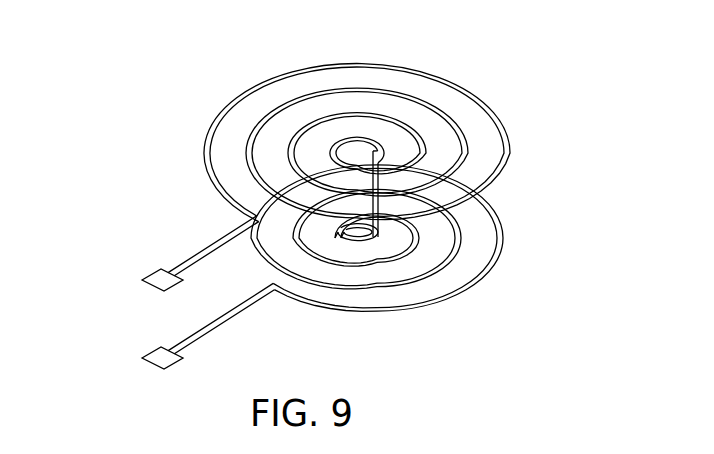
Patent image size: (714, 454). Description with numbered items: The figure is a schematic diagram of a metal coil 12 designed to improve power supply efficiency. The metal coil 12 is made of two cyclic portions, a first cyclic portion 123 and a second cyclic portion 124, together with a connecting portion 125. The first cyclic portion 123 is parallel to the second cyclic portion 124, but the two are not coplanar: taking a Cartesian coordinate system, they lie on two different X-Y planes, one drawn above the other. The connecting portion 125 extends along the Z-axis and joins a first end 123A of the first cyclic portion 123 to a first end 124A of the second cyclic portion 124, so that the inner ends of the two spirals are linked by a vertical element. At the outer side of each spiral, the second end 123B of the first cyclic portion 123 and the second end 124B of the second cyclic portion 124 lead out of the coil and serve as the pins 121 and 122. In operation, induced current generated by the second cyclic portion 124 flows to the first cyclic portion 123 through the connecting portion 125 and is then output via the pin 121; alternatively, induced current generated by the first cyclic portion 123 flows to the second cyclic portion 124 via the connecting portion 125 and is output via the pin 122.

The metal coil 12 is at (300, 204).
The pin 121 is at (152, 289).
The pin 122 is at (152, 367).
The first cyclic portion 123 is at (428, 100).
The first end of the first cyclic portion 123A is at (370, 141).
The second end of the first cyclic portion 123B is at (145, 270).
The second cyclic portion 124 is at (470, 285).
The first end of the second cyclic portion 124A is at (358, 249).
The second end of the second cyclic portion 124B is at (145, 348).
The connecting portion 125 is at (417, 222).